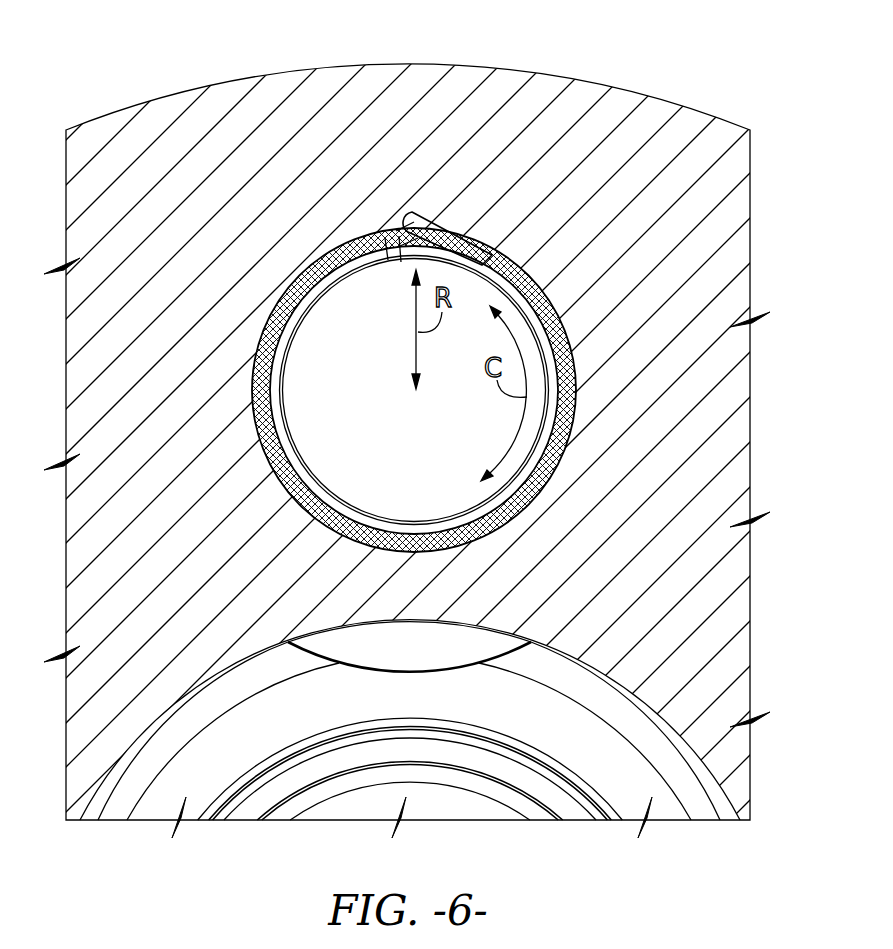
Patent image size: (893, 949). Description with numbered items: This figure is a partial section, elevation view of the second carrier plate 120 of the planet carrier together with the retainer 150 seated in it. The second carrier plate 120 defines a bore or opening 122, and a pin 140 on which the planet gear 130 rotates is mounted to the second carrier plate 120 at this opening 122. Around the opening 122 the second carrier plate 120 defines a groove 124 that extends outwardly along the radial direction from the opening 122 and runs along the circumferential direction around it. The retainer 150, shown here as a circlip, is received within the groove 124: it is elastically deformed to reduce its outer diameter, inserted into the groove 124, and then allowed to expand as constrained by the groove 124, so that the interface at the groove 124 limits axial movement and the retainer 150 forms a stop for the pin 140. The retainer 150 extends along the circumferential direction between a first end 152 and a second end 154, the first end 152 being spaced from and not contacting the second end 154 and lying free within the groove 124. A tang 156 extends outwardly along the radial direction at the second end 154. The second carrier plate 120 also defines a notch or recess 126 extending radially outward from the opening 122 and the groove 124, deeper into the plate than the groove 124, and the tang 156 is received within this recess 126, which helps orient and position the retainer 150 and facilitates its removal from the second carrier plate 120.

The second carrier plate 120 is at (627, 130).
The opening 122 is at (400, 246).
The groove 124 is at (385, 243).
The recess 126 is at (404, 216).
The planet gear 130 is at (387, 656).
The pin 140 is at (305, 462).
The retainer 150 is at (352, 515).
The first end 152 is at (332, 242).
The second end 154 is at (460, 230).
The tang 156 is at (433, 213).